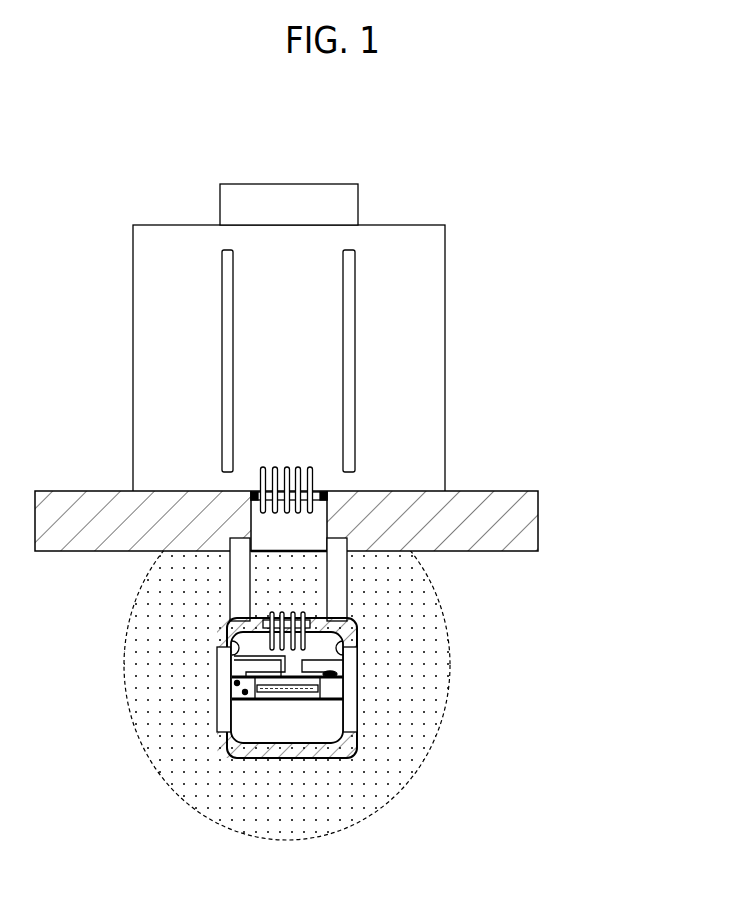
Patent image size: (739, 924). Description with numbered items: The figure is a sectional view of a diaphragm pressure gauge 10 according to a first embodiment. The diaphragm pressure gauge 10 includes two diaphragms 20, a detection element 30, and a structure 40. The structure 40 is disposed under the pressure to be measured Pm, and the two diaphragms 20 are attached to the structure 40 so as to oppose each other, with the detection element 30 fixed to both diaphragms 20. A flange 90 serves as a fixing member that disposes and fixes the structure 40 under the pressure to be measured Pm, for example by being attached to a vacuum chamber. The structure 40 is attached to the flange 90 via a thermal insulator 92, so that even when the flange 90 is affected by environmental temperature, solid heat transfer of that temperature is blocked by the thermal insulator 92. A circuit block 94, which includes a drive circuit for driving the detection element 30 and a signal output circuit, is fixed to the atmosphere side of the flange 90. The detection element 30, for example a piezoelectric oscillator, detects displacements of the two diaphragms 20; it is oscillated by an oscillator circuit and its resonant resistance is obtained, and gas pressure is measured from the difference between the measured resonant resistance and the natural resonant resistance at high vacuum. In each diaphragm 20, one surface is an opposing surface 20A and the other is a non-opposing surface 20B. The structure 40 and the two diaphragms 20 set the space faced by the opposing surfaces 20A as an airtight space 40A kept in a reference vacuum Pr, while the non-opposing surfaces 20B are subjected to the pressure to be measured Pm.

The diaphragm pressure gauge 10 is at (349, 711).
The diaphragm 20 is at (232, 668).
The opposing surface 20A is at (232, 640).
The non-opposing surface 20B is at (217, 712).
The detection element 30 is at (290, 698).
The structure 40 is at (322, 758).
The airtight space 40A is at (268, 717).
The flange 90 is at (538, 517).
The thermal insulator 92 is at (228, 585).
The circuit block 94 is at (445, 333).
The reference vacuum Pr is at (247, 732).
The pressure to be measured Pm is at (422, 760).